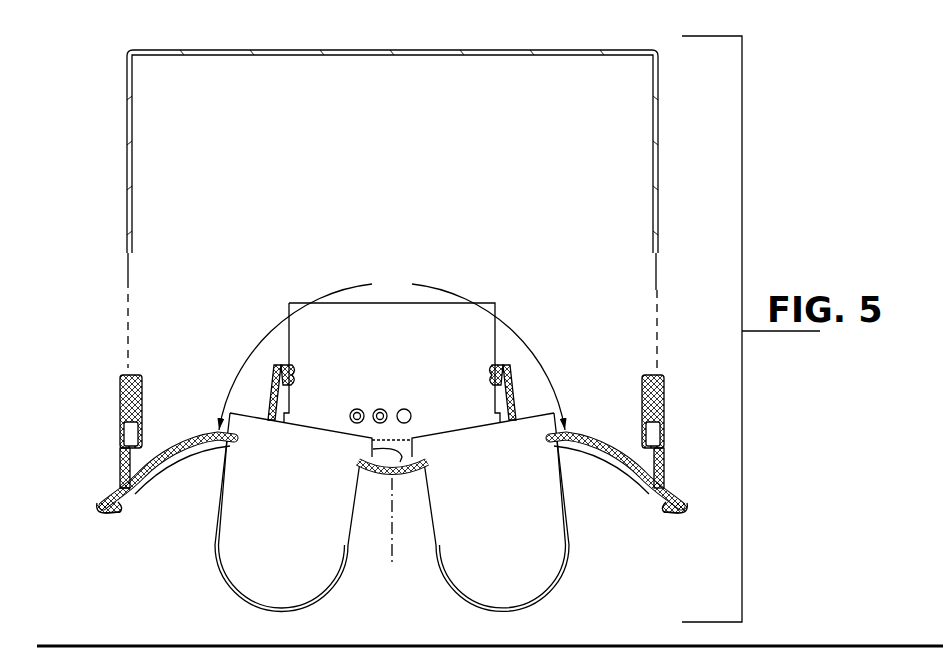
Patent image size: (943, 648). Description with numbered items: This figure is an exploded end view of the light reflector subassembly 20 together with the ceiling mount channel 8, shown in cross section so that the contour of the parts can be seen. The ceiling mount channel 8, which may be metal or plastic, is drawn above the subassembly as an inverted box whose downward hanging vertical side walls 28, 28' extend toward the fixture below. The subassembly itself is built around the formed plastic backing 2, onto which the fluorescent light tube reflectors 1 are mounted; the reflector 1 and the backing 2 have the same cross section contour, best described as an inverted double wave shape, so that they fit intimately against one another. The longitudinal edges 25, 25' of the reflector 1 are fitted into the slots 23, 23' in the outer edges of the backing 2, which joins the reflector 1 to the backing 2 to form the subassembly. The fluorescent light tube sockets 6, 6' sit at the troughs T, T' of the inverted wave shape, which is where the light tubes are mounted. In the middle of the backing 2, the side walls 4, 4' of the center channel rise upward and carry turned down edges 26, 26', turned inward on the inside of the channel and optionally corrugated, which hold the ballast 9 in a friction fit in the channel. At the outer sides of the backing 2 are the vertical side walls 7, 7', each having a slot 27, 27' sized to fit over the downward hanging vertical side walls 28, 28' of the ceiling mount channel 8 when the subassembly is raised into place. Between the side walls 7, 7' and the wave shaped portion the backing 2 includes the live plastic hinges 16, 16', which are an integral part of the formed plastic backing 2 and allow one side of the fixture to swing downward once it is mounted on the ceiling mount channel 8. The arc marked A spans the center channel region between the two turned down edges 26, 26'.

The fluorescent light tube reflectors 1 is at (168, 460).
The formed plastic backing for reflector 2 is at (186, 432).
The side wall of center channel of formed plastic backing 4 is at (534, 374).
The side wall of center channel of formed plastic backing 4' is at (247, 371).
The fluorescent light tube socket 6 is at (509, 517).
The fluorescent light tube socket 6' is at (275, 521).
The side wall of plastic backing 7 is at (685, 411).
The side wall of plastic backing 7' is at (97, 411).
The ceiling mount channel 8 is at (543, 52).
The ballast 9 is at (365, 369).
The live plastic hinge 16 is at (696, 479).
The live plastic hinge 16' is at (87, 497).
The light reflector subassembly 20 is at (107, 453).
The slot in outer edge of formed plastic backing 23 is at (649, 531).
The slot in outer edge of formed plastic backing 23' is at (146, 532).
The edge of fluorescent light tube reflector 25 is at (702, 524).
The edge of fluorescent light tube reflector 25' is at (92, 530).
The turned down edge of side wall of center channel 26 is at (520, 336).
The turned down edge of side wall of center channel 26' is at (265, 331).
The slot in side wall of formed plastic backing 27 is at (681, 437).
The slot in side wall of formed plastic backing 27' is at (87, 429).
The side wall of ceiling mount channel 28 is at (684, 245).
The side wall of ceiling mount channel 28' is at (100, 237).
The angle A is at (392, 354).
The inverted wave shape trough T is at (601, 470).
The inverted wave shape trough T' is at (182, 470).